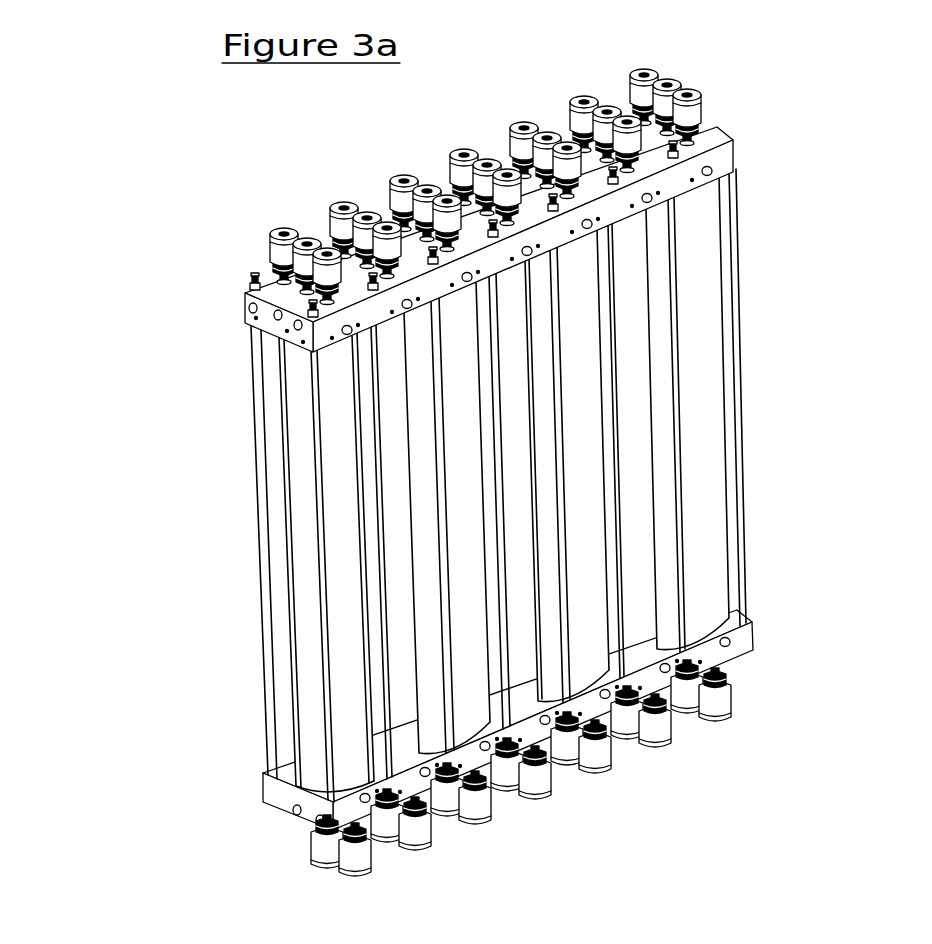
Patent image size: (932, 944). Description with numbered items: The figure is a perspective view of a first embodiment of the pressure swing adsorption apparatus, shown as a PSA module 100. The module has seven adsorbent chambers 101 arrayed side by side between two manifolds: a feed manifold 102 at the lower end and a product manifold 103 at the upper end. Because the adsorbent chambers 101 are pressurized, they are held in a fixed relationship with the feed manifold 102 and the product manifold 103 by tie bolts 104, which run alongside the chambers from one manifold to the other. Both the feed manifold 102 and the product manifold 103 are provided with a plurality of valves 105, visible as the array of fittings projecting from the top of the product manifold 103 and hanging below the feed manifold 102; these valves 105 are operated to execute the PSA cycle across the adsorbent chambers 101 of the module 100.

The PSA module 100 is at (222, 293).
The adsorbent chamber 101 is at (720, 428).
The feed manifold 102 is at (757, 628).
The product manifold 103 is at (745, 152).
The tie bolt 104 is at (258, 428).
The valve 105 is at (660, 70).